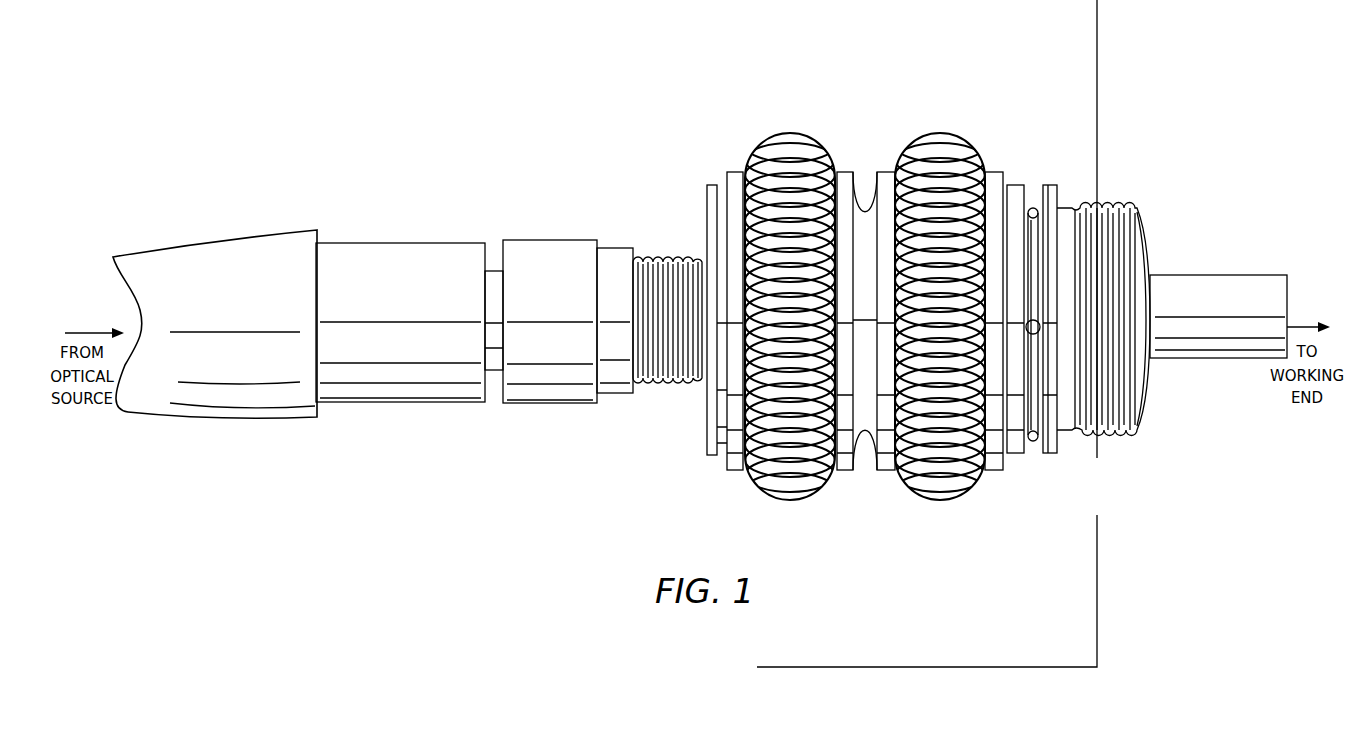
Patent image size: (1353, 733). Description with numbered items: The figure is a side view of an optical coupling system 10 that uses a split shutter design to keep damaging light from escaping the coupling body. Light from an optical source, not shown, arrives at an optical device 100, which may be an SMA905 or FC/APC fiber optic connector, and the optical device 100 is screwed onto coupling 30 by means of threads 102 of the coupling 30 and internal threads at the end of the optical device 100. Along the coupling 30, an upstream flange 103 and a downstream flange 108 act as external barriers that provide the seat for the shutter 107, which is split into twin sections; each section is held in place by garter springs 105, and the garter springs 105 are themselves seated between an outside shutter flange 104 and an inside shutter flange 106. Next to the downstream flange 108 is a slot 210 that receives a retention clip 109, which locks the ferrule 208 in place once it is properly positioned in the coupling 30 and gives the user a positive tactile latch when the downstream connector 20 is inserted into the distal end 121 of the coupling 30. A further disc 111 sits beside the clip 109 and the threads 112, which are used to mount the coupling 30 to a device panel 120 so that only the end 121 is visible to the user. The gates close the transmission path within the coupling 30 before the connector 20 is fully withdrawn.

The optical coupling system 10 is at (617, 52).
The downstream connector 20 is at (1178, 244).
The coupling 30 is at (638, 92).
The optical device 100 is at (637, 213).
The threads 102 is at (668, 388).
The upstream flange 103 is at (712, 458).
The outside shutter flange 104 is at (736, 472).
The garter springs 105 is at (834, 495).
The inside shutter flange 106 is at (848, 472).
The shutter 107 is at (730, 143).
The downstream flange 108 is at (1016, 457).
The retention clip 109 is at (1033, 443).
The disc 111 is at (1057, 455).
The threads 112 is at (1105, 432).
The panel 120 is at (1098, 8).
The distal end 121 is at (1150, 368).
The ferrule 208 is at (1218, 280).
The slot 210 is at (1035, 206).